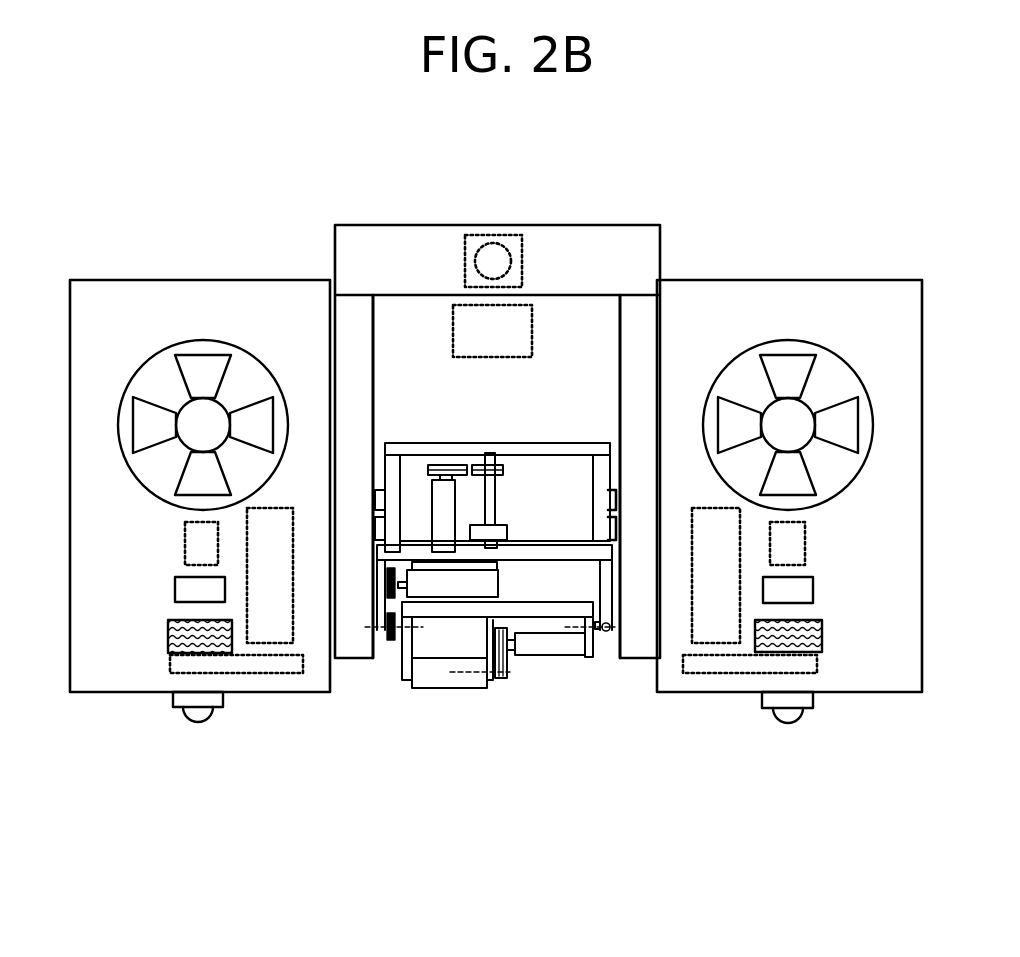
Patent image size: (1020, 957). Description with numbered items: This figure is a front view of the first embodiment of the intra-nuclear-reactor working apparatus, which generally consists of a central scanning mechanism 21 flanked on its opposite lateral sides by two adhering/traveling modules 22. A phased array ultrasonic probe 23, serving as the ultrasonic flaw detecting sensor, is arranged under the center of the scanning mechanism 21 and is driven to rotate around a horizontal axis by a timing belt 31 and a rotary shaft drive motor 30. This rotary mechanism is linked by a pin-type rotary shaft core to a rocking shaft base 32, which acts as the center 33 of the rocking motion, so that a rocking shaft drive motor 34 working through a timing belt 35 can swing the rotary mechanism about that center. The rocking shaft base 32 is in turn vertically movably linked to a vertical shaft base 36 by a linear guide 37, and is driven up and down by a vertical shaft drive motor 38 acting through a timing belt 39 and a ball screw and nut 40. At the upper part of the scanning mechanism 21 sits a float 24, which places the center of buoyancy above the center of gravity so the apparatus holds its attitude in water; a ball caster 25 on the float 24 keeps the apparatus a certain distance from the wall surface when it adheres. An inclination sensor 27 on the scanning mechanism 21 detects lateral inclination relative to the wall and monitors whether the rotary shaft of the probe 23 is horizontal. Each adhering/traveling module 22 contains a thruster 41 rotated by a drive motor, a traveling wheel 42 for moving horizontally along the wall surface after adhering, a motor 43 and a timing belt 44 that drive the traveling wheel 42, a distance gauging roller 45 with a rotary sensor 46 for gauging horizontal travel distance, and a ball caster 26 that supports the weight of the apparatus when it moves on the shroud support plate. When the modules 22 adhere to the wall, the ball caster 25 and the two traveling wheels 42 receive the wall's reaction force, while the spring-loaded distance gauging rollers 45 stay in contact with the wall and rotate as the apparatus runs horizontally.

The scanning mechanism 21 is at (628, 773).
The adhering/traveling module 22 is at (330, 773).
The phased array ultrasonic probe 23 is at (433, 677).
The float 24 is at (572, 348).
The ball caster 25 is at (505, 235).
The ball caster 26 is at (203, 715).
The inclination sensor 27 is at (478, 348).
The rotary shaft drive motor 30 is at (545, 643).
The timing belt 31 is at (505, 660).
The rocking shaft base 32 is at (517, 555).
The center of the rocking motion 33 is at (607, 632).
The rocking shaft drive motor 34 is at (498, 583).
The timing belt 35 is at (385, 613).
The vertical shaft base 36 is at (352, 395).
The linear guide 37 is at (623, 497).
The vertical shaft drive motor 38 is at (442, 497).
The timing belt 39 is at (465, 464).
The ball screw and nut 40 is at (493, 525).
The thruster 41 is at (210, 372).
The traveling wheel 42 is at (172, 637).
The motor 43 is at (256, 588).
The timing belt 44 is at (240, 664).
The distance gauging roller 45 is at (180, 590).
The rotary sensor 46 is at (190, 546).